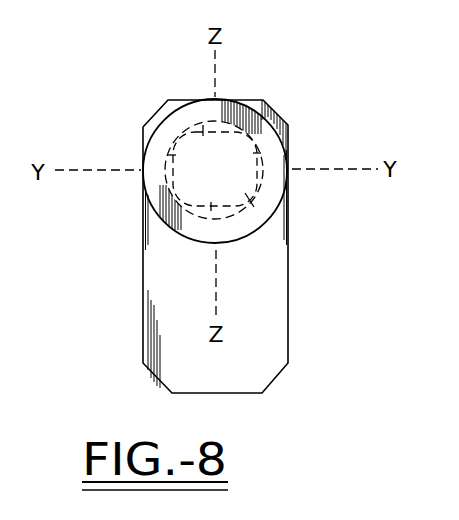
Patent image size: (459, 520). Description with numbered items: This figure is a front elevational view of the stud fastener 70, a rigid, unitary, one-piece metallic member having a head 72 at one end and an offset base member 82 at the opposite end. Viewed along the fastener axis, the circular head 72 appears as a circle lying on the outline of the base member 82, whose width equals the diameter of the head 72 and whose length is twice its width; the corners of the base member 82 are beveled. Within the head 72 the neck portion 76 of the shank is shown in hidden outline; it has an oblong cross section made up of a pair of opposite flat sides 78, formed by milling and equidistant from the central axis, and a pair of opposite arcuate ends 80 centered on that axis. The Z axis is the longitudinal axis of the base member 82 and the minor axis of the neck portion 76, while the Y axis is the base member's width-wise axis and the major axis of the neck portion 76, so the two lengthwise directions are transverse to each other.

The stud fastener 70 is at (292, 118).
The head 72 is at (250, 234).
The neck portion 76 is at (252, 205).
The flat sides 78 is at (200, 120).
The arcuate ends 80 is at (170, 155).
The base member 82 is at (158, 315).